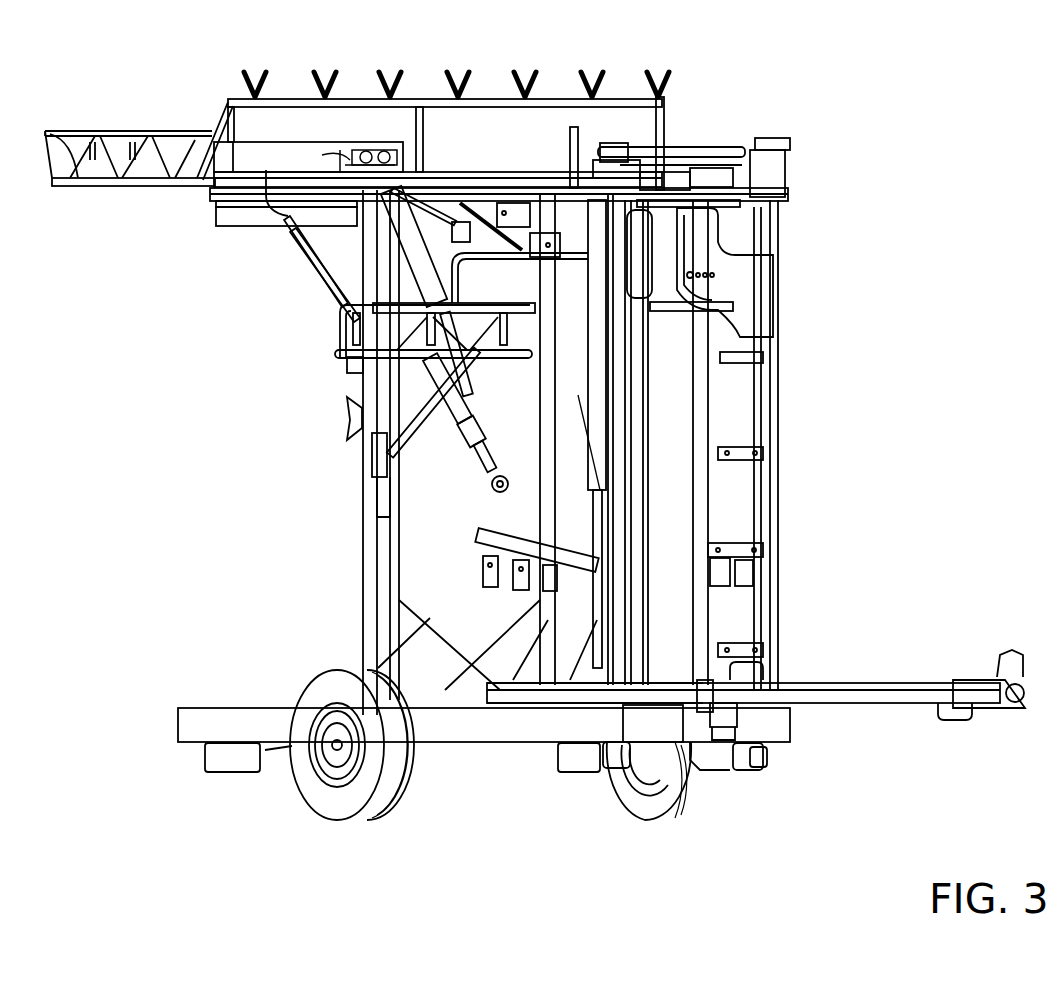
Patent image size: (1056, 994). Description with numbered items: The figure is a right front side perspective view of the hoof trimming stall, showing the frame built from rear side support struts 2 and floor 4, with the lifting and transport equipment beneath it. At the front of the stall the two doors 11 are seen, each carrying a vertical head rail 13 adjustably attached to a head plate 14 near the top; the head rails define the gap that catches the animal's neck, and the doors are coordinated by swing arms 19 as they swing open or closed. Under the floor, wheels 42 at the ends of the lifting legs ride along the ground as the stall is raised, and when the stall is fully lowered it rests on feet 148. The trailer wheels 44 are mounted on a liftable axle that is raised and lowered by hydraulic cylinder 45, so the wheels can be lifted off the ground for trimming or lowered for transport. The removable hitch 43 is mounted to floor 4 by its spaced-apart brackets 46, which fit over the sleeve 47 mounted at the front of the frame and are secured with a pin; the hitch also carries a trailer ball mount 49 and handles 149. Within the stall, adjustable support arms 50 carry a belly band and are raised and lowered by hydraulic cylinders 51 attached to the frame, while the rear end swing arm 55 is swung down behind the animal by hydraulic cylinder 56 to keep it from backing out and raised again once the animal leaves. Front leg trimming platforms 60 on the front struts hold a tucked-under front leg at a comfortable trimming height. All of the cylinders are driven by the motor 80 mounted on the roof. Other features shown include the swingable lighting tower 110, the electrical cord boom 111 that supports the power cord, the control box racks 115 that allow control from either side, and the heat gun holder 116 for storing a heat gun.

The rear side support struts 2 is at (377, 547).
The floor 4 is at (220, 708).
The doors 11 is at (770, 392).
The head rails 13 is at (698, 500).
The head plates 14 is at (760, 303).
The swing arms 19 is at (693, 152).
The wheels 42 is at (630, 760).
The removable hitch 43 is at (890, 693).
The trailer wheels 44 is at (328, 803).
The hydraulic cylinder 45 is at (578, 473).
The brackets 46 is at (700, 688).
The sleeve 47 is at (720, 718).
The trailer ball mount 49 is at (987, 700).
The adjustable support arms 50 is at (467, 435).
The hydraulic cylinders 51 is at (417, 250).
The rear end swing arm 55 is at (233, 222).
The hydraulic cylinder 56 is at (382, 168).
The front leg trimming platforms 60 is at (477, 545).
The motor 80 is at (322, 155).
The swingable lighting tower 110 is at (63, 130).
The electrical cord boom 111 is at (472, 102).
The control box racks 115 is at (337, 343).
The heat gun holder 116 is at (380, 457).
The feet 148 is at (218, 763).
The handles 149 is at (762, 667).